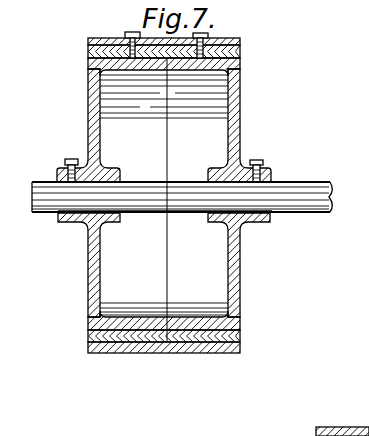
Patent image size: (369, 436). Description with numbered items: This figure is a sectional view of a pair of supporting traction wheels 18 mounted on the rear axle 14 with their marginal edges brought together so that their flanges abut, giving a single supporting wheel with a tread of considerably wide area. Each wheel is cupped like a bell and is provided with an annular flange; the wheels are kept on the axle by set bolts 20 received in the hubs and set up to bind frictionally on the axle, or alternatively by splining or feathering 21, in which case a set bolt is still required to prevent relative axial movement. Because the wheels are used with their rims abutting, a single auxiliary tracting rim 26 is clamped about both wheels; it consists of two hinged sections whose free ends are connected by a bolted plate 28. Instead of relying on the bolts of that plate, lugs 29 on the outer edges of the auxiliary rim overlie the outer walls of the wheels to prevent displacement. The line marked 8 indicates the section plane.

The section line 8- 8 is at (132, 32).
The rear axle 14 is at (313, 186).
The supporting traction wheels 18 is at (100, 133).
The set bolts 20 is at (263, 160).
The splining or feathering 21 is at (206, 214).
The auxiliary tracting rim 26 is at (240, 53).
The bolted plate 28 is at (240, 40).
The lugs 29 is at (100, 67).